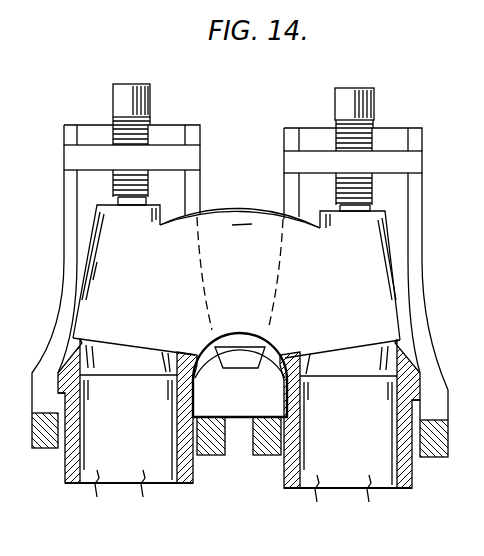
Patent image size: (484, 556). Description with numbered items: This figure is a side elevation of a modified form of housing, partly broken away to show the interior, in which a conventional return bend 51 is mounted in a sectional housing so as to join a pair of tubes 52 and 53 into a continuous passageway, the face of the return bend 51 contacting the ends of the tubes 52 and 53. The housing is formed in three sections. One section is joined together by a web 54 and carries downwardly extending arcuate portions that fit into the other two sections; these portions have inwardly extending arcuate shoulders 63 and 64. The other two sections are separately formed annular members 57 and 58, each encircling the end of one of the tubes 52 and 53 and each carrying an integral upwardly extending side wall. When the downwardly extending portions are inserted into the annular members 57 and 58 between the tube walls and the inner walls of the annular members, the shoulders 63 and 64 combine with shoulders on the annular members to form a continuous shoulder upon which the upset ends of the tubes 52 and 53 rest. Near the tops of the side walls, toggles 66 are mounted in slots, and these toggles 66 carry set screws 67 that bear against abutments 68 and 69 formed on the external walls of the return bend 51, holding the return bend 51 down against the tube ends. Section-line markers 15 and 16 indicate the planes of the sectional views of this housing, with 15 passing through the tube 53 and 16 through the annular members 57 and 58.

The section line 15- 15 is at (355, 80).
The section line 16- 16 is at (40, 333).
The return bend 51 is at (236, 283).
The tube 52 is at (127, 418).
The tube 53 is at (350, 420).
The web 54 is at (240, 394).
The annular member 57 is at (42, 437).
The annular member 58 is at (430, 456).
The arcuate shoulder 63 is at (55, 393).
The arcuate shoulder 64 is at (420, 400).
The toggle 66 is at (243, 159).
The set screw 67 is at (146, 110).
The abutment 68 is at (116, 271).
The abutment 69 is at (360, 275).